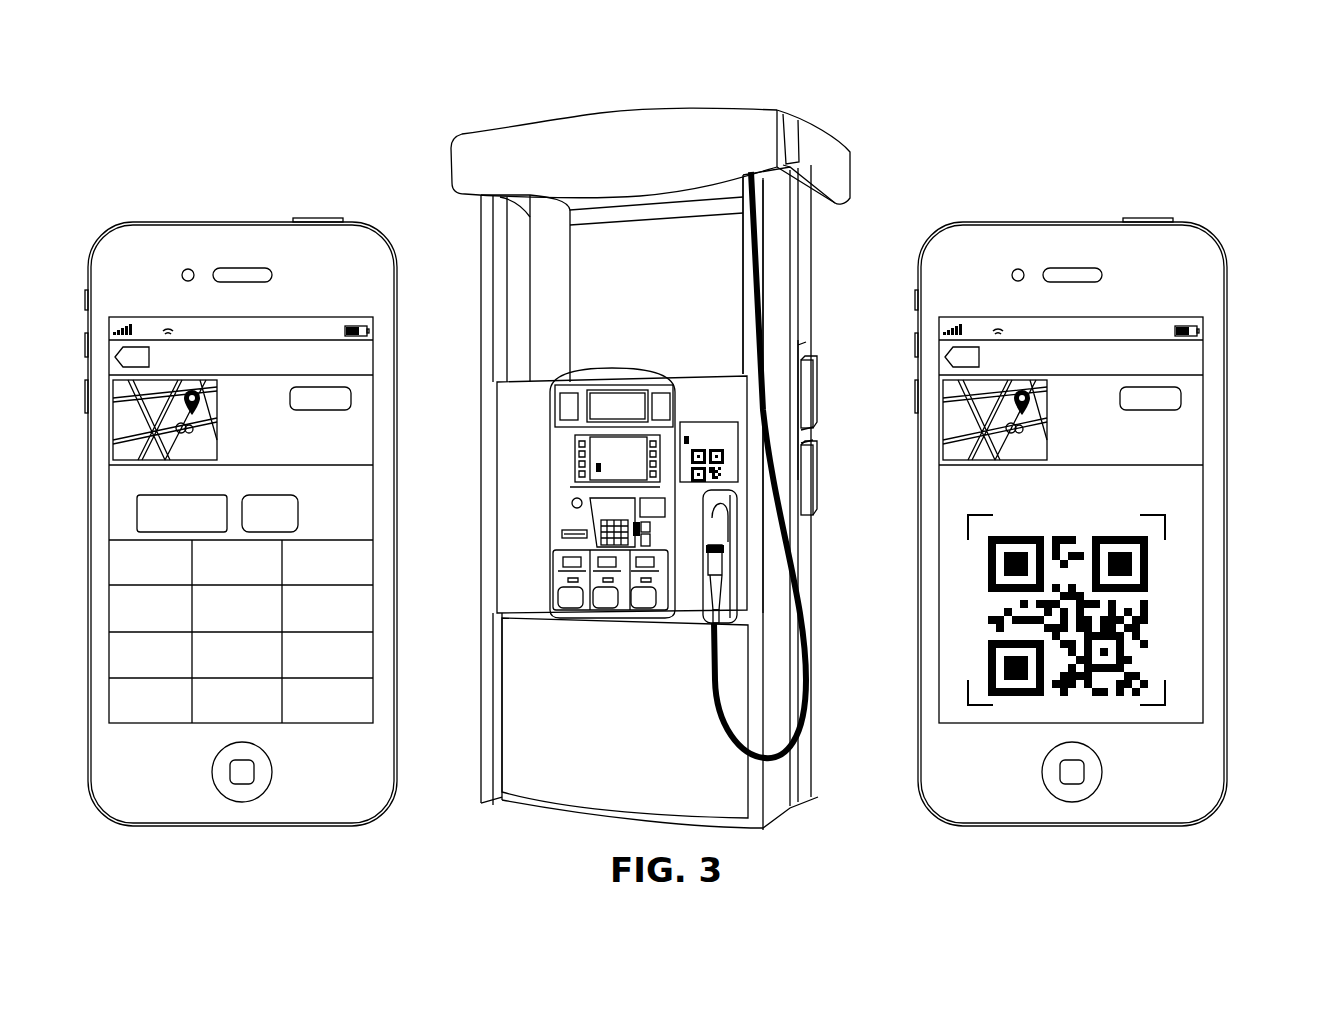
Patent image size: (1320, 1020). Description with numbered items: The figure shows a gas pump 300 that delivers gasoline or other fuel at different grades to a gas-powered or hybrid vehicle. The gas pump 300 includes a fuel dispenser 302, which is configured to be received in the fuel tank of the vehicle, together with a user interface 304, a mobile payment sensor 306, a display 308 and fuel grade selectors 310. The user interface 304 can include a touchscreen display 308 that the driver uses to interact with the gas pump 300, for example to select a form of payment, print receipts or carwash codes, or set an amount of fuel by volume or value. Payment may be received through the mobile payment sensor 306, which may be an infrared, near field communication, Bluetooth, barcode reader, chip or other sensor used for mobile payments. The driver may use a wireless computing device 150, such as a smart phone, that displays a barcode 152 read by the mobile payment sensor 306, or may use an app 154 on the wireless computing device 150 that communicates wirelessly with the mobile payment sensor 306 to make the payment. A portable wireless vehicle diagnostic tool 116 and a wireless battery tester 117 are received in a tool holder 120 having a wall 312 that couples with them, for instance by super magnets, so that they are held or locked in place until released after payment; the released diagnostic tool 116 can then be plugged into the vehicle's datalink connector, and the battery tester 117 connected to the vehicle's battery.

The gas pump 300 is at (578, 108).
The fuel dispenser 302 is at (745, 550).
The user interface 304 is at (585, 372).
The mobile payment sensor 306 is at (700, 420).
The display 308 is at (590, 446).
The fuel grade selectors 310 is at (605, 612).
The wall 312 is at (806, 288).
The portable wireless vehicle diagnostic tool 116 is at (815, 376).
The wireless battery tester 117 is at (815, 463).
The tool holder 120 is at (808, 437).
The wireless computing device 150 is at (213, 220).
The barcode 152 is at (1155, 648).
The app 154 is at (150, 513).